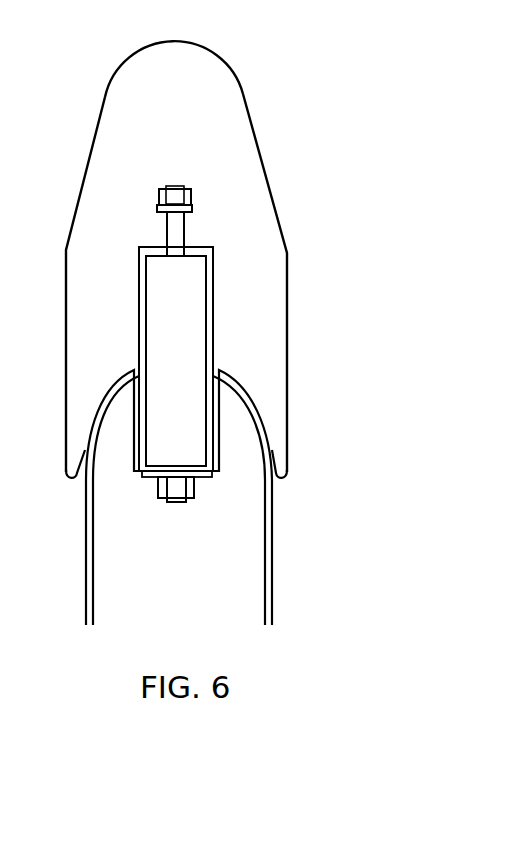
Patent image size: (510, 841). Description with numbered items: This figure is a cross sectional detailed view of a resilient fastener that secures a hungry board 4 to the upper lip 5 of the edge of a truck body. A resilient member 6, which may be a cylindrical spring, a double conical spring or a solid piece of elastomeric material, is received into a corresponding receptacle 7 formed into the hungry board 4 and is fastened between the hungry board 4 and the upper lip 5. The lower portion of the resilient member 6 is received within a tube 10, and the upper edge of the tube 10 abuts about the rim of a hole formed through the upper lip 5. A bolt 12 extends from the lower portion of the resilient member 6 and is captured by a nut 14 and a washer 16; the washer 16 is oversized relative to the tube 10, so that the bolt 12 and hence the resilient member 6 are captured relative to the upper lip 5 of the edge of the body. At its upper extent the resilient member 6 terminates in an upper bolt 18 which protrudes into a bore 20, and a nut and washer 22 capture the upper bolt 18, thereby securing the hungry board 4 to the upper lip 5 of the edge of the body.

The hungry board 4 is at (253, 330).
The upper lip 5 is at (102, 408).
The resilient member 6 is at (205, 298).
The receptacle 7 is at (137, 282).
The tube 10 is at (215, 440).
The bolt 12 is at (178, 498).
The nut 14 is at (195, 490).
The washer 16 is at (147, 477).
The upper bolt 18 is at (177, 227).
The bore 20 is at (200, 90).
The nut and washer 22 is at (190, 192).